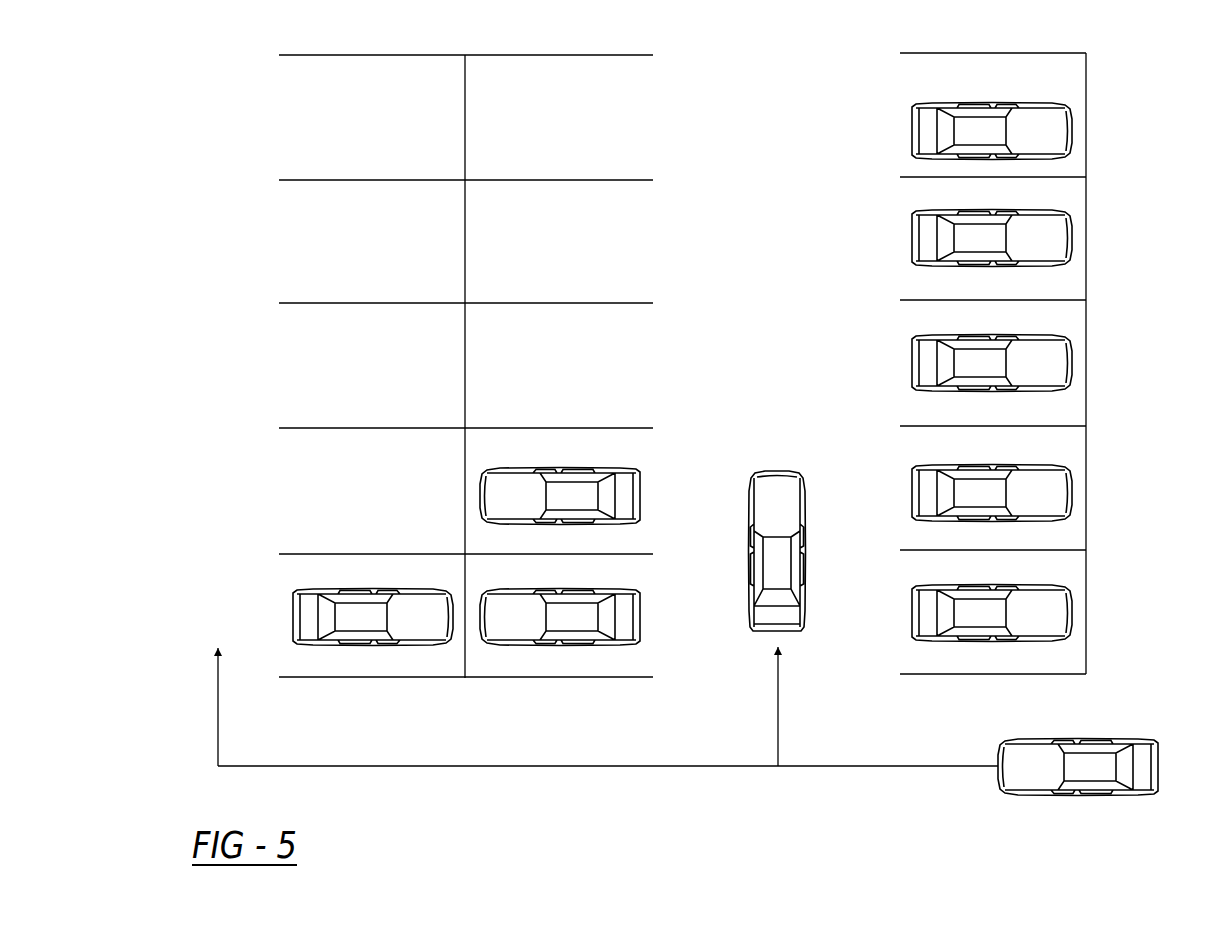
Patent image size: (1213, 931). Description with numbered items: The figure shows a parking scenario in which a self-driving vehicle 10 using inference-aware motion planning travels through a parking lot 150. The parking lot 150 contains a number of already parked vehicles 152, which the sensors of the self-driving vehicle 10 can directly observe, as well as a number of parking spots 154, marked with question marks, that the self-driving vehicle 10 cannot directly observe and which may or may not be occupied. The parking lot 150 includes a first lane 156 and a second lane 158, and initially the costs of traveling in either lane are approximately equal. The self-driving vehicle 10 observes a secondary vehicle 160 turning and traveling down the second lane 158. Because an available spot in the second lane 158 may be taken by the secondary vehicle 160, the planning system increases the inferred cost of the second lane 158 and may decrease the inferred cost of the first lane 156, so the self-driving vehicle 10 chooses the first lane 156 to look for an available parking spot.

The self-driving vehicle 10 is at (1108, 740).
The parking lot 150 is at (1108, 73).
The already parked vehicles 152 is at (588, 469).
The parking spots 154 is at (340, 95).
The first lane 156 is at (215, 103).
The second lane 158 is at (774, 93).
The secondary vehicle 160 is at (787, 472).